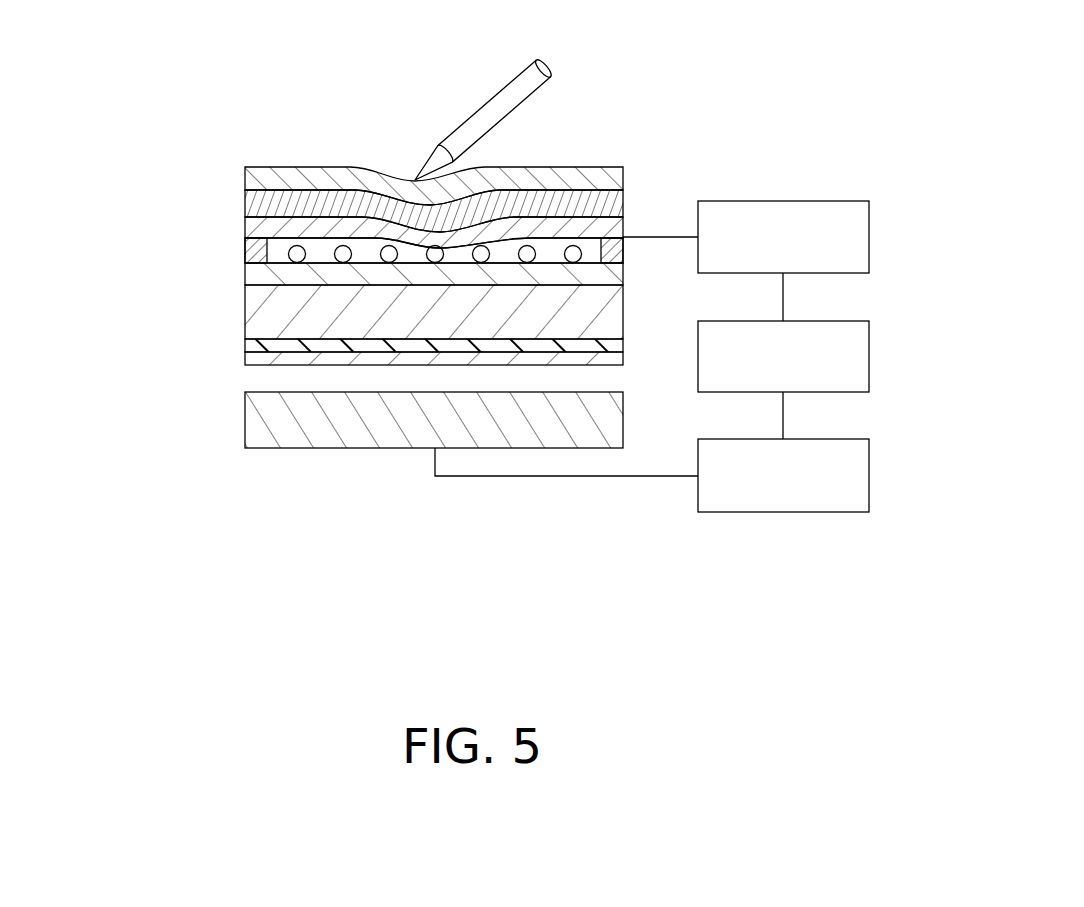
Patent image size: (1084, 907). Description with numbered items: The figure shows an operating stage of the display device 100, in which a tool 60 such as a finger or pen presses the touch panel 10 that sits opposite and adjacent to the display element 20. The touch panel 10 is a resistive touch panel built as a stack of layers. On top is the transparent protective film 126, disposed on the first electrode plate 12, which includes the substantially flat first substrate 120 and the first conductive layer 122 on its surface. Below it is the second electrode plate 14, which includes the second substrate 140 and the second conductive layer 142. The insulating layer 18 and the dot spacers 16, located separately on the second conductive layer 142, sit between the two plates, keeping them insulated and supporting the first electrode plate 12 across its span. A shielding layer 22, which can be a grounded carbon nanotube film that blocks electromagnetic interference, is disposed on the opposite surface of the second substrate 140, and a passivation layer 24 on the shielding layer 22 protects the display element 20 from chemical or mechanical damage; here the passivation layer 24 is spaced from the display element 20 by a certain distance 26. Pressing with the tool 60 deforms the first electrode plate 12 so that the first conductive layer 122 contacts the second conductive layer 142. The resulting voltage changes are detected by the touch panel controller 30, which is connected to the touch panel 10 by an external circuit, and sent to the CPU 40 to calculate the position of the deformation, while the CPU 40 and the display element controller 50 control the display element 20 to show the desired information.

The display device 100 is at (634, 167).
The touch panel 10 is at (118, 117).
The first electrode plate 12 is at (163, 178).
The first substrate 120 is at (245, 192).
The first conductive layer 122 is at (245, 218).
The transparent protective film 126 is at (245, 170).
The second electrode plate 14 is at (161, 262).
The second substrate 140 is at (245, 300).
The second conductive layer 142 is at (250, 256).
The dot spacers 16 is at (573, 245).
The insulating layer 18 is at (627, 248).
The display element 20 is at (245, 425).
The shielding layer 22 is at (245, 345).
The passivation layer 24 is at (245, 358).
The distance 26 is at (258, 378).
The touch panel controller 30 is at (860, 246).
The central processing unit 40 is at (860, 350).
The display element controller 50 is at (860, 455).
The tool 60 is at (512, 90).